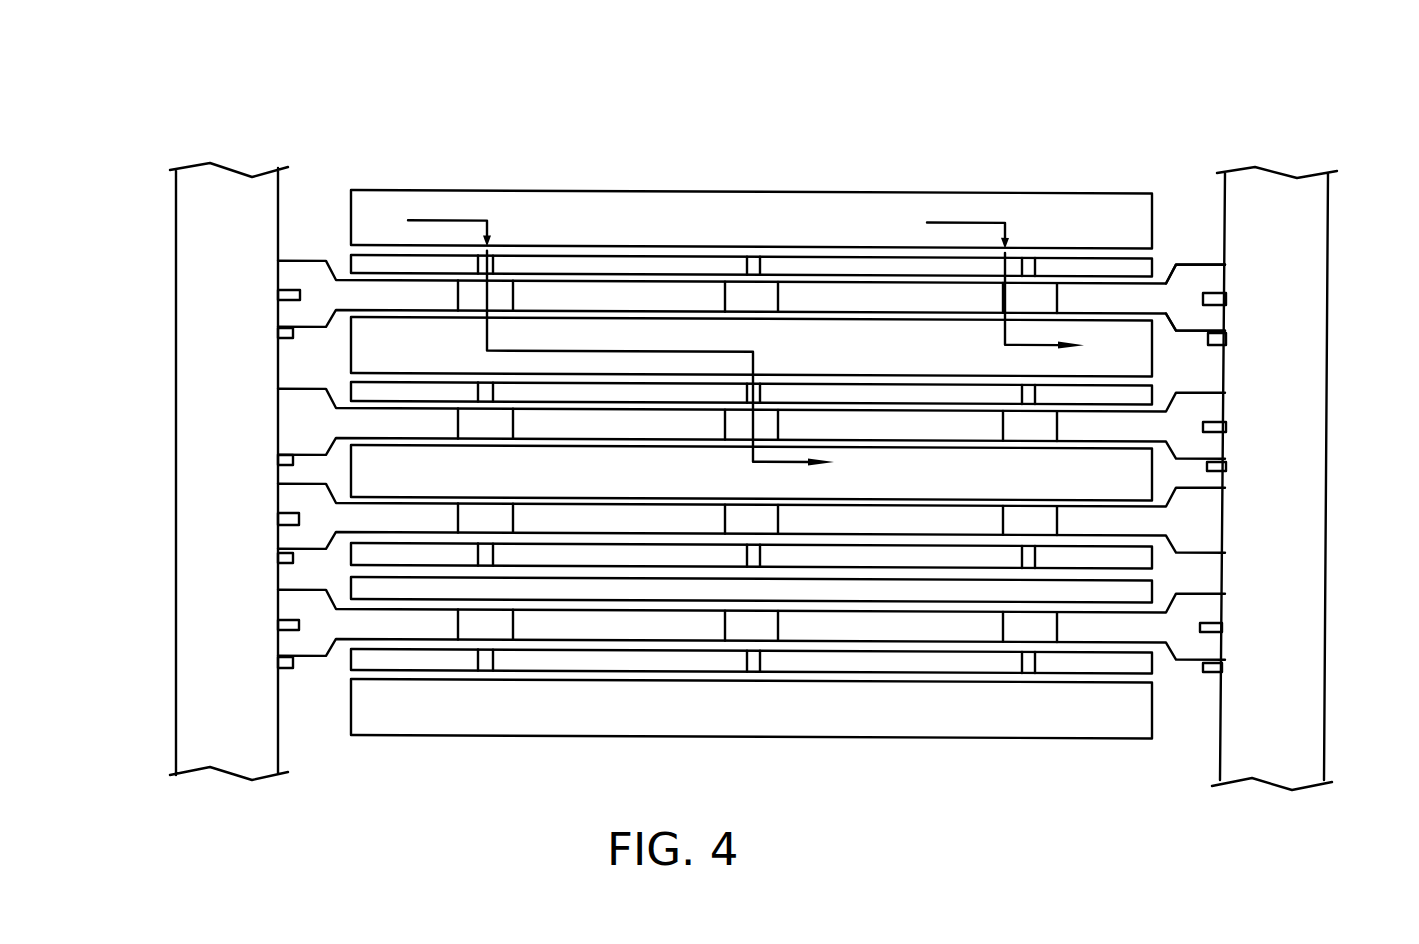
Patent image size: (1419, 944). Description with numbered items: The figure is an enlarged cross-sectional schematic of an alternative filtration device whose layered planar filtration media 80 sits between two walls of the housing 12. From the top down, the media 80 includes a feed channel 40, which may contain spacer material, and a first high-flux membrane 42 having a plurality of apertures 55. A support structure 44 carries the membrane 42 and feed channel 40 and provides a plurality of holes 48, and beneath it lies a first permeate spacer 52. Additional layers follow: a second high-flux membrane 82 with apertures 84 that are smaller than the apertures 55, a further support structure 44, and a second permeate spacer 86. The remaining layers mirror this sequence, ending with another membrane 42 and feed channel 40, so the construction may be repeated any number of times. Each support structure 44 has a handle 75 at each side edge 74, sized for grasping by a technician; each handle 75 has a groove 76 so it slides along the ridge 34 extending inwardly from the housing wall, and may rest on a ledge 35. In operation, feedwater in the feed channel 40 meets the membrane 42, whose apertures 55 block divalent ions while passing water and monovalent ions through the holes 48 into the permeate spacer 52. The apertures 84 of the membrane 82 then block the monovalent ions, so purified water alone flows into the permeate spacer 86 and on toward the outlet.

The filtration media 80 is at (1072, 77).
The housing 12 is at (267, 204).
The feed channel 40 is at (468, 198).
The high-flux membrane 42 is at (582, 263).
The apertures 55 is at (754, 258).
The support structure 44 is at (806, 292).
The holes 48 is at (1058, 298).
The permeate spacer 52 is at (1082, 333).
The side edge 74 is at (1160, 277).
The handle 75 is at (1203, 267).
The groove 76 is at (1210, 298).
The ledge 35 is at (1218, 343).
The ridge 34 is at (1213, 428).
The apertures 84 is at (470, 380).
The high-flux membrane 82 is at (357, 393).
The permeate spacer 86 is at (354, 459).